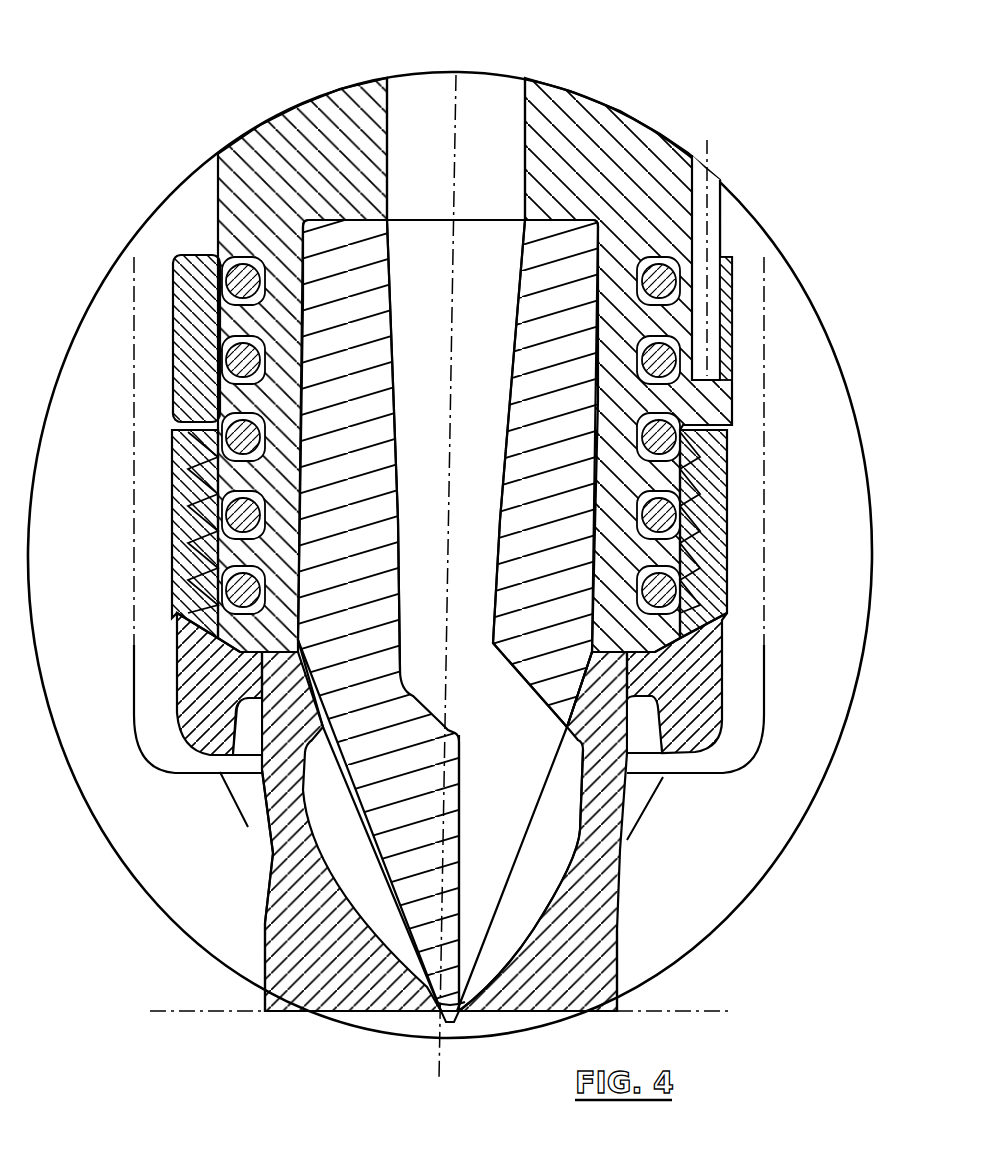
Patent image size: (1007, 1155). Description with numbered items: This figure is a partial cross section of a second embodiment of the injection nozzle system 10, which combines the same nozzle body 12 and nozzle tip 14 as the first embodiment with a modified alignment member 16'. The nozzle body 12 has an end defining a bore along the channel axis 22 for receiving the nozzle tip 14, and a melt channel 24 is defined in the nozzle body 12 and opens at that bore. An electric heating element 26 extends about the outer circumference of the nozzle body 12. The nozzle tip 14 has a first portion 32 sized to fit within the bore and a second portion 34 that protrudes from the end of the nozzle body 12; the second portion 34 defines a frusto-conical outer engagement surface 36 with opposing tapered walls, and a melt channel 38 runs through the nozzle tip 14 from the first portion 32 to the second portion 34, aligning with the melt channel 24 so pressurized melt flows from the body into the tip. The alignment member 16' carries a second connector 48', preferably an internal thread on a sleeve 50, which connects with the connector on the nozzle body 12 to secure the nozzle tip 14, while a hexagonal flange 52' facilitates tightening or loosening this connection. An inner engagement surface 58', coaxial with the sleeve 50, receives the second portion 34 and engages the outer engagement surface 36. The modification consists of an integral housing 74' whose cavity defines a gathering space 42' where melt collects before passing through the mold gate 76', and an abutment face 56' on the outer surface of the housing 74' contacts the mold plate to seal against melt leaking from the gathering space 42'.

The nozzle system 10 is at (788, 180).
The nozzle body 12 is at (643, 143).
The nozzle tip 14 is at (336, 194).
The channel axis 22 is at (455, 190).
The melt channel 24 is at (507, 96).
The electric heating element 26 is at (272, 344).
The first portion 32 is at (545, 345).
The second portion 34 is at (405, 821).
The outer engagement surface 36 is at (536, 700).
The melt channel 38 is at (414, 469).
The gathering space 42' is at (570, 880).
The second connector 48' is at (517, 522).
The sleeve 50 is at (728, 556).
The hexagonal flange 52' is at (169, 693).
The abutment face 56' is at (463, 967).
The inner engagement surface 58' is at (695, 713).
The alignment member 16' is at (417, 831).
The integral housing 74' is at (242, 852).
The mold gate 76' is at (477, 1037).